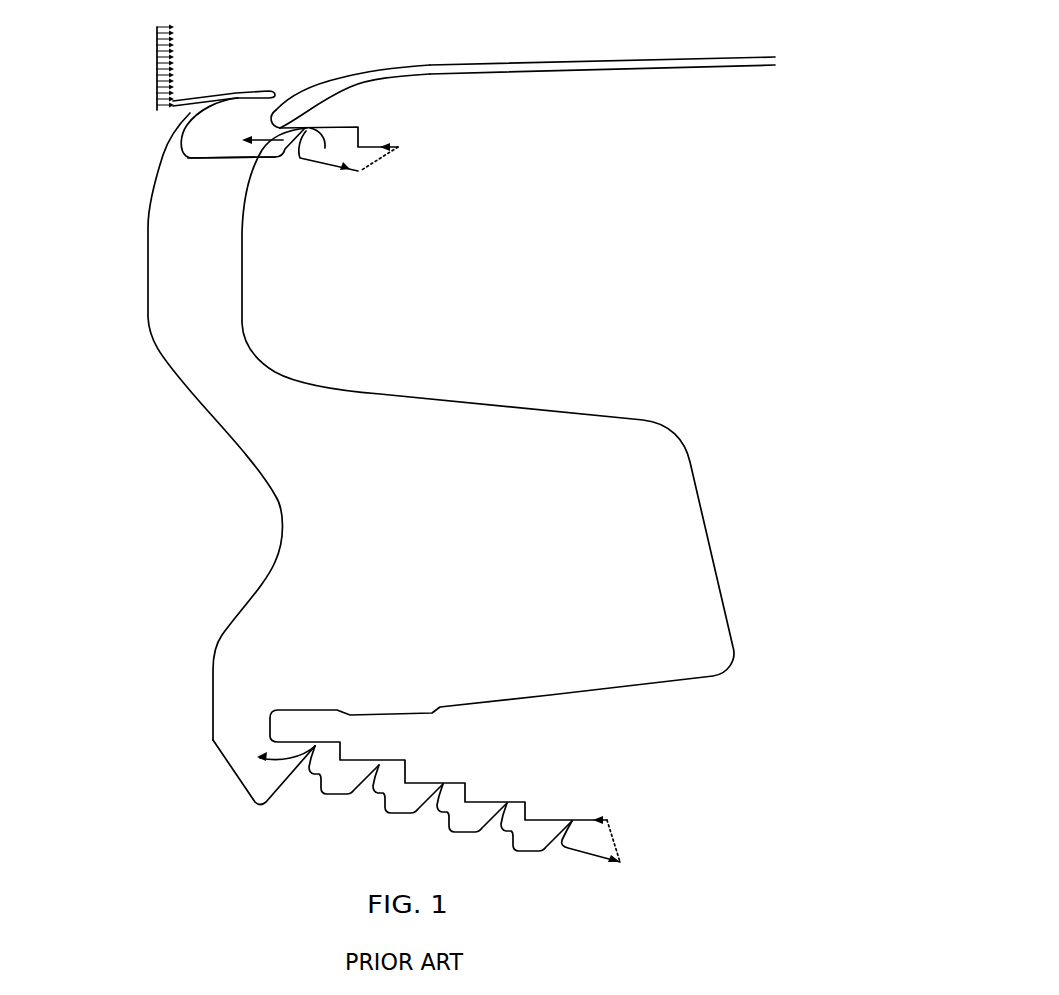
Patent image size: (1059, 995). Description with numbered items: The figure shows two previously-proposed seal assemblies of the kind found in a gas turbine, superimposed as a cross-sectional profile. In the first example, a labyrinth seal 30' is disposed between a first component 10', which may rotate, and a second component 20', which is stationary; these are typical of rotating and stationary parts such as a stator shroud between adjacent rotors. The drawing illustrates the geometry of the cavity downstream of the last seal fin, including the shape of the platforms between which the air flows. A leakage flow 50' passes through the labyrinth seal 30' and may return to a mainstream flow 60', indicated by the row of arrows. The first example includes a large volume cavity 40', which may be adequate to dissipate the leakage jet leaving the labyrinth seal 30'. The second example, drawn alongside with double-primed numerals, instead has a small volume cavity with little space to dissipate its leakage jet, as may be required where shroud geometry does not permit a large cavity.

The first component 10' is at (237, 67).
The second component 20' is at (577, 59).
The labyrinth seal 30' is at (416, 801).
The large volume cavity 40' is at (225, 426).
The leakage flow 50' is at (265, 788).
The mainstream flow 60' is at (108, 66).